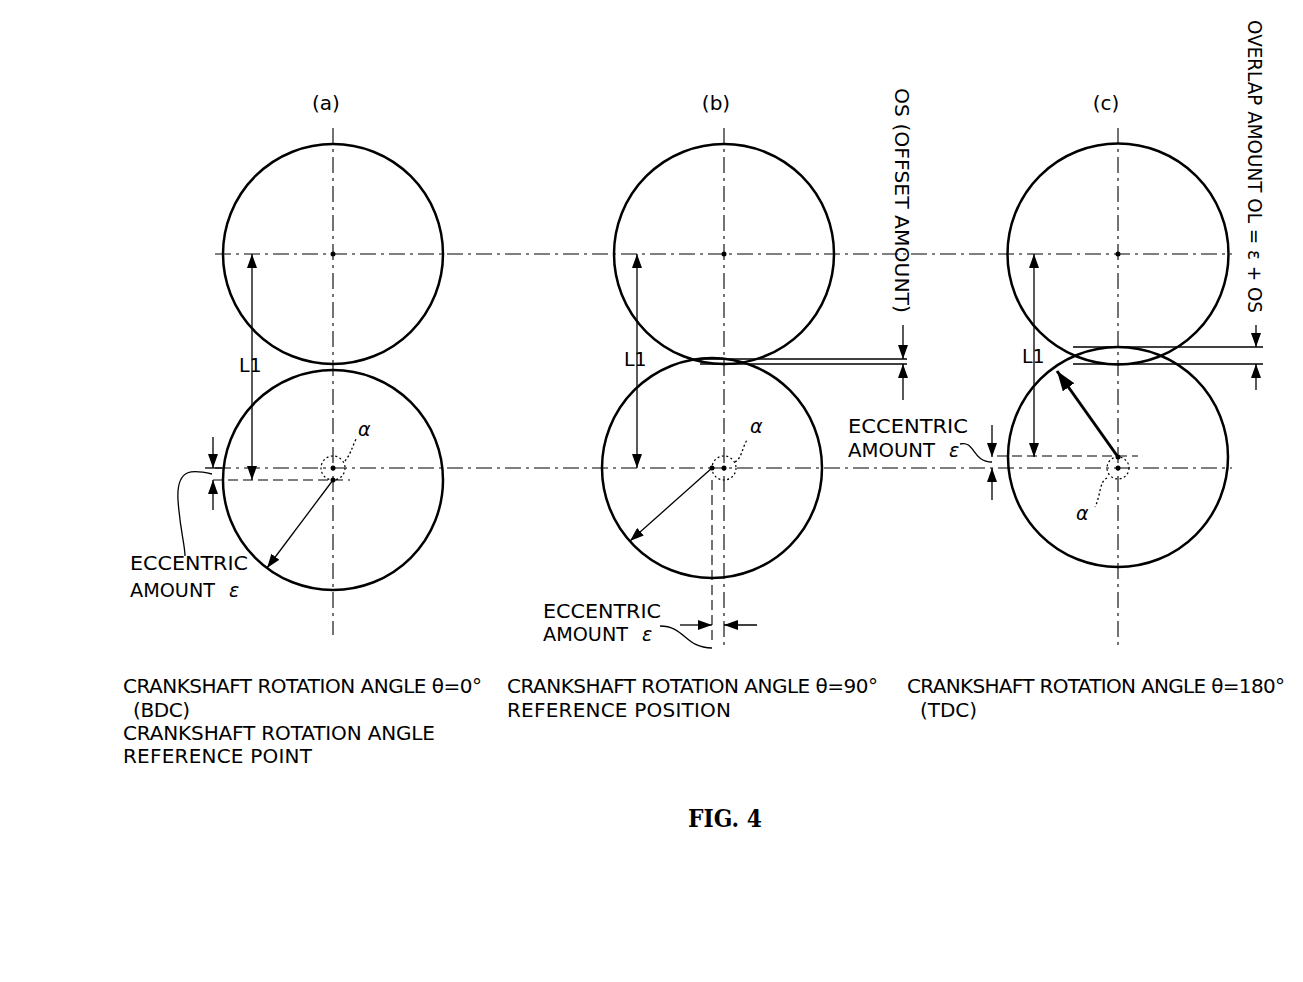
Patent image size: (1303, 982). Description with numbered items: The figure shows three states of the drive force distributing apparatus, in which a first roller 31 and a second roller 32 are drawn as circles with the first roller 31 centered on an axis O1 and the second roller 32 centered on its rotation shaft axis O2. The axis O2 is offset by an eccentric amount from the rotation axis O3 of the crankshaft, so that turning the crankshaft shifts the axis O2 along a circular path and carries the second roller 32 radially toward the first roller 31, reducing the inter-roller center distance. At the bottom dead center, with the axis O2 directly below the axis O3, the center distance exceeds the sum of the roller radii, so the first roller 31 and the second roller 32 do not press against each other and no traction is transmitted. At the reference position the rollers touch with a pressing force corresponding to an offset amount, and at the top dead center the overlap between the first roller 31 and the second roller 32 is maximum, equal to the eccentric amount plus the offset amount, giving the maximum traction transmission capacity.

The first roller 31 is at (409, 172).
The second roller 32 is at (409, 556).
The center of first rotating member O1 is at (333, 253).
The rotation shaft axis of the second roller O2 is at (335, 482).
The rotation axis of crankshaft O3 is at (331, 465).